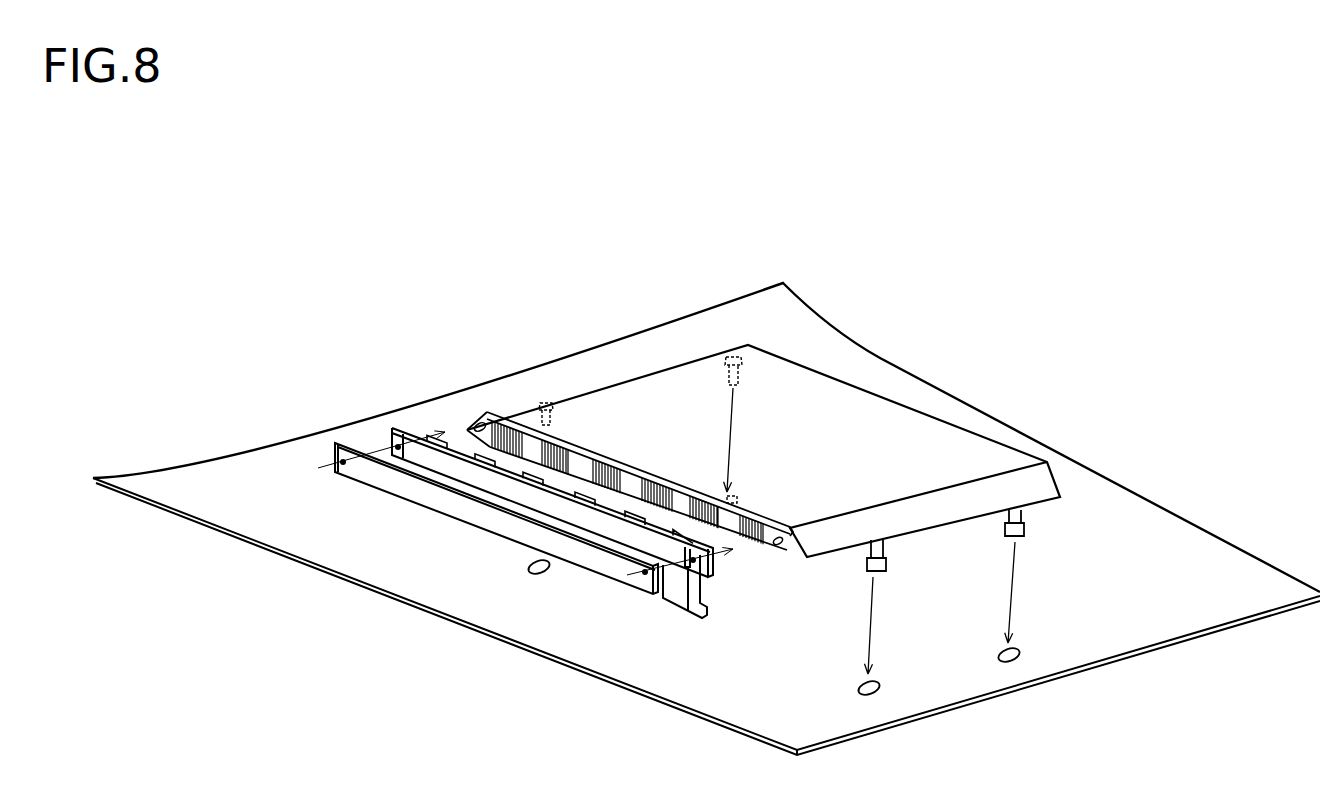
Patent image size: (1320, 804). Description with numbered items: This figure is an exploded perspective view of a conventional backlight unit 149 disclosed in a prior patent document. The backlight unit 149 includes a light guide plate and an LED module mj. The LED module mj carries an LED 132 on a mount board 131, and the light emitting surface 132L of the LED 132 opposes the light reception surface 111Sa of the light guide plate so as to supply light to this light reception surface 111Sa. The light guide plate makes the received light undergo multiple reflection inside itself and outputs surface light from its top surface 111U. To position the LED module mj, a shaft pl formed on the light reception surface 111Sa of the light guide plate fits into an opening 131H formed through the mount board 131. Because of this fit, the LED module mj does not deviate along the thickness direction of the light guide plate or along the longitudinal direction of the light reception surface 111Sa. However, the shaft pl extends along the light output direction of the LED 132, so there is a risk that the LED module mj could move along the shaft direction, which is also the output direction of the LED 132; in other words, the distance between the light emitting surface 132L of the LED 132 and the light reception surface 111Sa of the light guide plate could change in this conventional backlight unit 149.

The backlight unit 149 is at (129, 361).
The top surface 111U is at (763, 509).
The light reception surface 111Sa is at (542, 535).
The shaft pl is at (476, 426).
The LED module mj is at (531, 486).
The mount board 131 is at (697, 562).
The opening 131H is at (396, 446).
The LED 132 is at (705, 542).
The light emitting surface 132L is at (492, 462).